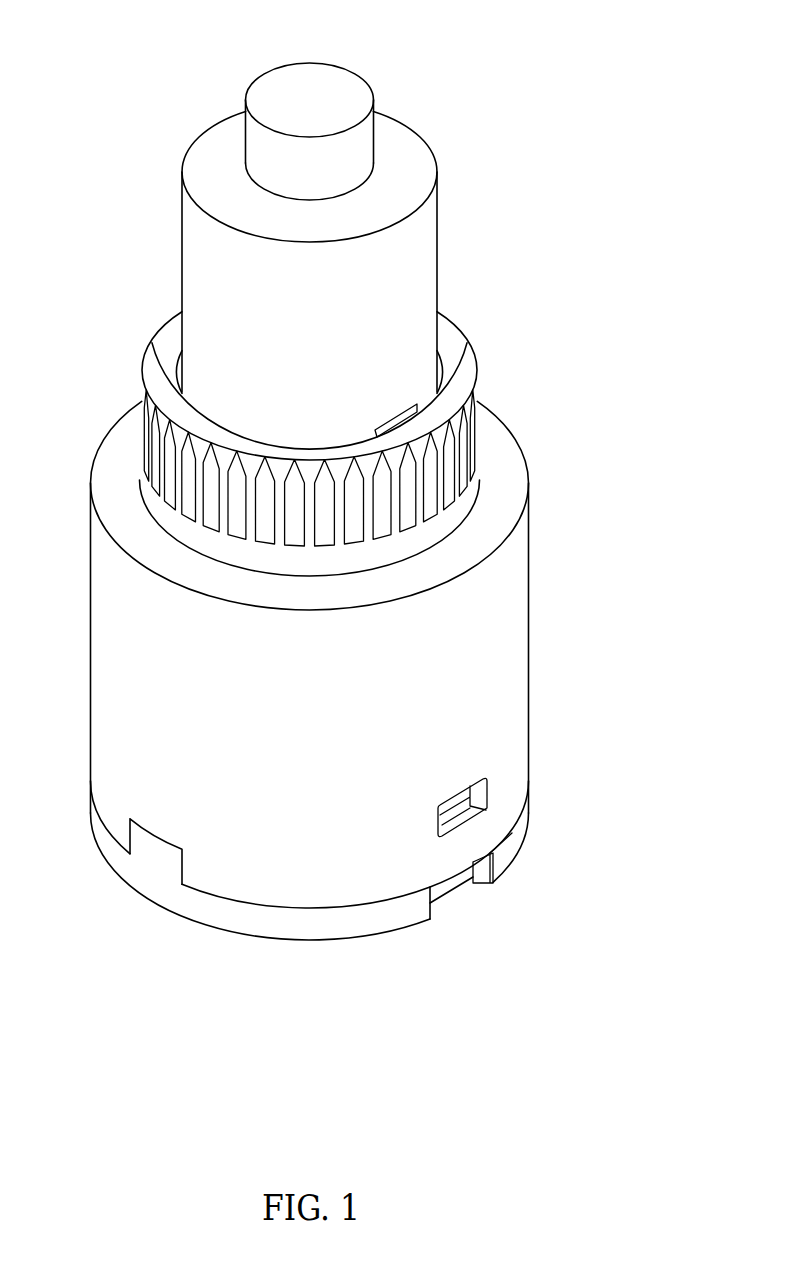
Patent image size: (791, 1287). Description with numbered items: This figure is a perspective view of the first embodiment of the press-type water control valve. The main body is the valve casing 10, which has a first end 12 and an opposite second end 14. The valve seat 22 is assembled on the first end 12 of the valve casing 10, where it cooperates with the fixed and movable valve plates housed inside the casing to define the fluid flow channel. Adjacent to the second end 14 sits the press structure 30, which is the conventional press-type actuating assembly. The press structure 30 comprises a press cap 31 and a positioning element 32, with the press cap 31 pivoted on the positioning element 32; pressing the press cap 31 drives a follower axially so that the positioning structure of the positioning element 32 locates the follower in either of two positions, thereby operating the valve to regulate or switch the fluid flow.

The valve casing 10 is at (529, 633).
The first end 12 is at (517, 847).
The second end 14 is at (163, 367).
The valve seat 22 is at (398, 930).
The press structure 30 is at (456, 152).
The press cap 31 is at (355, 72).
The positioning element 32 is at (437, 277).